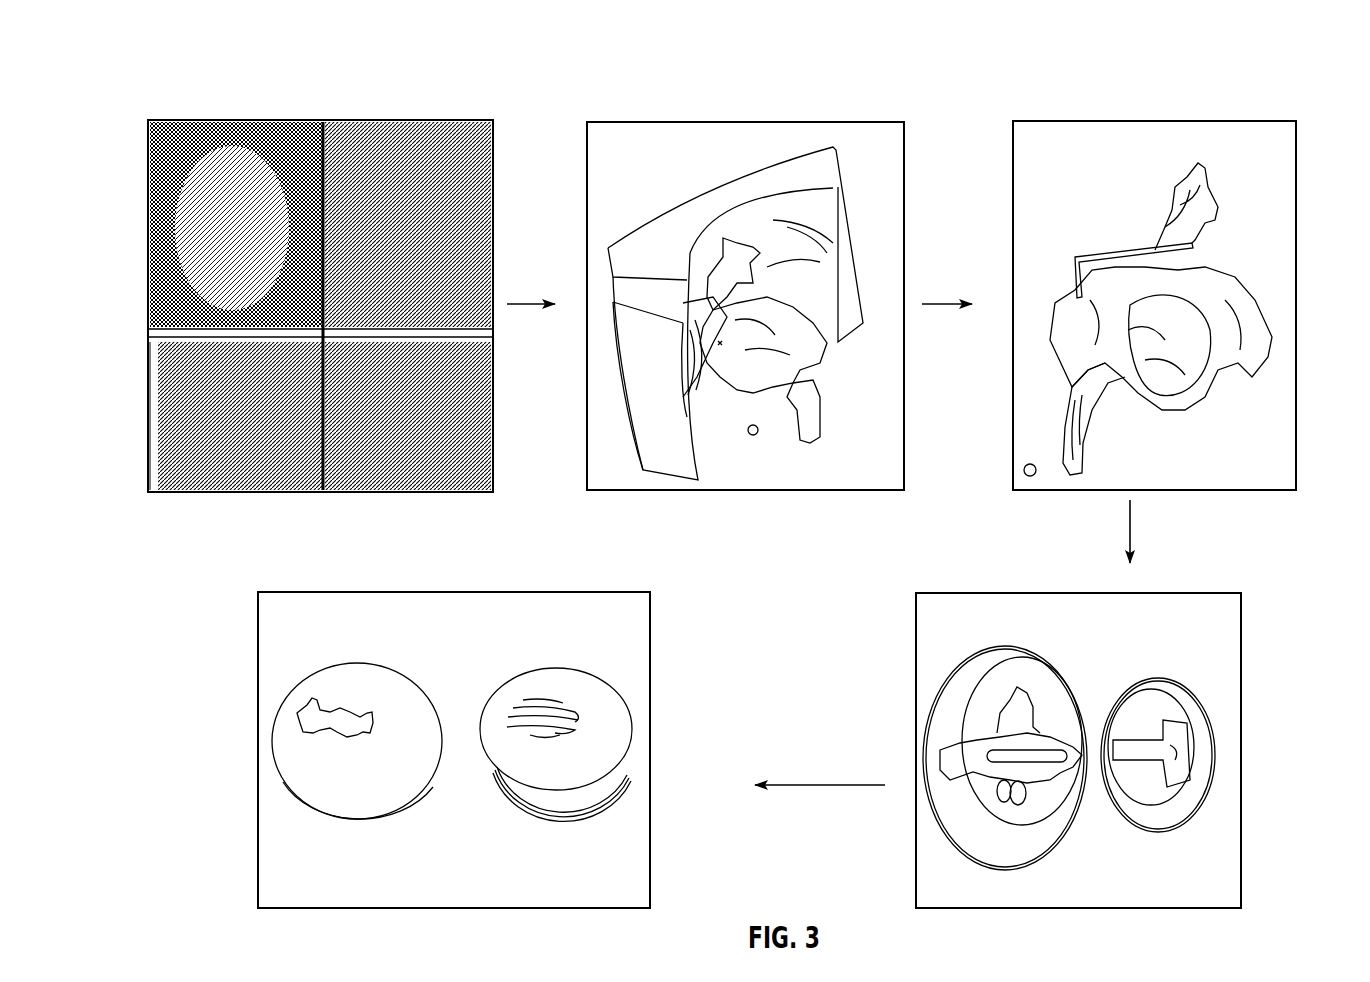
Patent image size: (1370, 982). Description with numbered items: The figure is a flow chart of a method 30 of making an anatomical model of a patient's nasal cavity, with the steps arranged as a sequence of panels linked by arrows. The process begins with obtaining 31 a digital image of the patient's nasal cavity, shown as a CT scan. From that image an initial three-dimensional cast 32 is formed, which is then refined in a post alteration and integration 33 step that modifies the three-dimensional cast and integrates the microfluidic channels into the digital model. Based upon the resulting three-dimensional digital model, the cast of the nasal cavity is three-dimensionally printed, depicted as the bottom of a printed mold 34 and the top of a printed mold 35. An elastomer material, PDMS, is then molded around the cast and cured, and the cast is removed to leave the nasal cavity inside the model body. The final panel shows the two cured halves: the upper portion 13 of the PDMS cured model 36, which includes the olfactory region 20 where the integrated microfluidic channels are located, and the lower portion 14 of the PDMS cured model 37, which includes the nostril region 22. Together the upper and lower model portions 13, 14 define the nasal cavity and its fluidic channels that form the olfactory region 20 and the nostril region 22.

The method of forming patient-specific implant 30 is at (153, 60).
The obtaining a digital image 31 is at (462, 92).
The initial 3D cast 32 is at (893, 92).
The post alteration and integration of microfluidic channel 3D cast 33 is at (1286, 92).
The bottom of 3D printed mold 34 is at (1208, 651).
The top of 3D printed mold 35 is at (944, 650).
The upper portion of PDMS cured model 36 is at (612, 651).
The lower portion of PDMS cured model 37 is at (296, 645).
The nostril region 22 is at (302, 698).
The lower model portion 14 is at (300, 753).
The olfactory region 20 is at (598, 708).
The upper model portion 13 is at (603, 786).